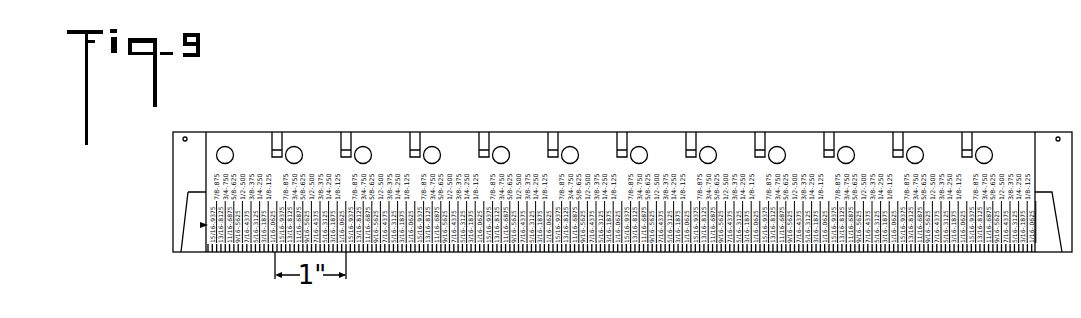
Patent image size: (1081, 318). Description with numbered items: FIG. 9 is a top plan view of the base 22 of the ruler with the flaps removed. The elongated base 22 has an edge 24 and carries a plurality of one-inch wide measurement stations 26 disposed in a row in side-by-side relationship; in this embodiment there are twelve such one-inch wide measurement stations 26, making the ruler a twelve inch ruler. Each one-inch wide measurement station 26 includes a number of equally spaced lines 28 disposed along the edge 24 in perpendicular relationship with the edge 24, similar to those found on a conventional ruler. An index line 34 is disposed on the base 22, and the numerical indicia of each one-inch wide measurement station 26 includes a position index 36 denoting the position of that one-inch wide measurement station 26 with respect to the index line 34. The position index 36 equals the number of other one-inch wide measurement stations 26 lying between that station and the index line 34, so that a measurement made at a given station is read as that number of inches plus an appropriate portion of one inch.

The elongated base 22 is at (1021, 95).
The edge 24 is at (633, 251).
The one-inch wide measurement station 26 is at (388, 147).
The equally spaced lines 28 is at (483, 252).
The index line 34 is at (1033, 252).
The position index 36 is at (650, 152).